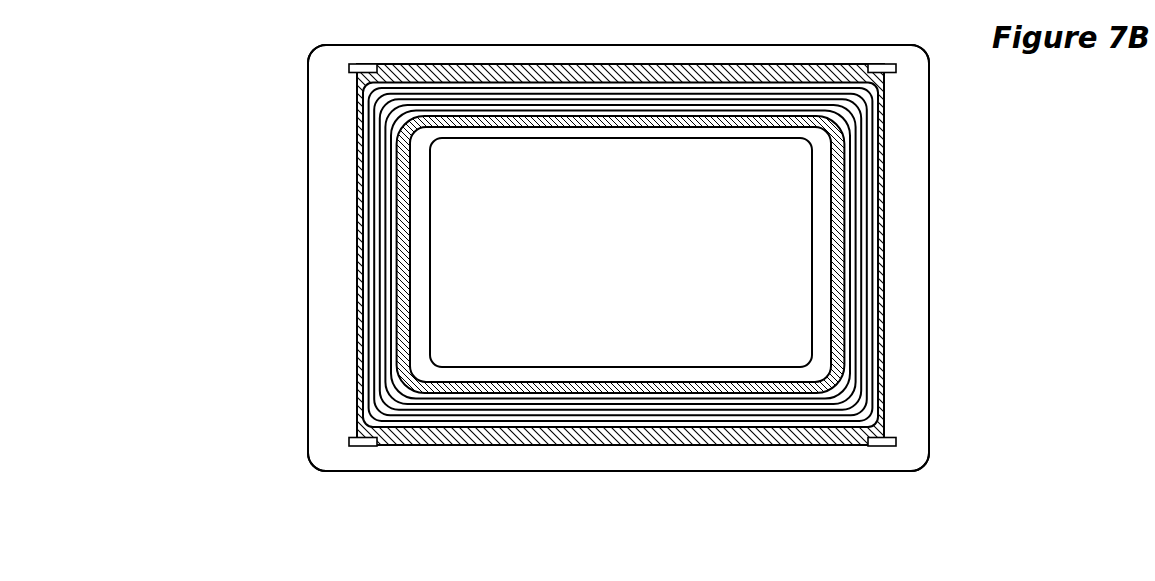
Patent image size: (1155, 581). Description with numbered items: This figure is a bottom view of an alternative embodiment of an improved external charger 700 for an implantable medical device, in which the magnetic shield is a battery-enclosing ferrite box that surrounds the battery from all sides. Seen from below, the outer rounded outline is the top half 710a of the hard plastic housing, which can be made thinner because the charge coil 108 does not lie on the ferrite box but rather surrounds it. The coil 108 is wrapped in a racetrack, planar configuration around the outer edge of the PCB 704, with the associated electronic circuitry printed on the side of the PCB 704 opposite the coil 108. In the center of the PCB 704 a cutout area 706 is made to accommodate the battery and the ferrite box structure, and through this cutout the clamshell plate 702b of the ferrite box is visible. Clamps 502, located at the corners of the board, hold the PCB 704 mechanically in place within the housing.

The external charger 700 is at (268, 62).
The clamps 502 is at (349, 68).
The cutout area 706 is at (420, 242).
The clamshell plate 702b is at (647, 258).
The top half of housing 710a is at (930, 278).
The coil 108 is at (403, 425).
The PCB 704 is at (697, 447).